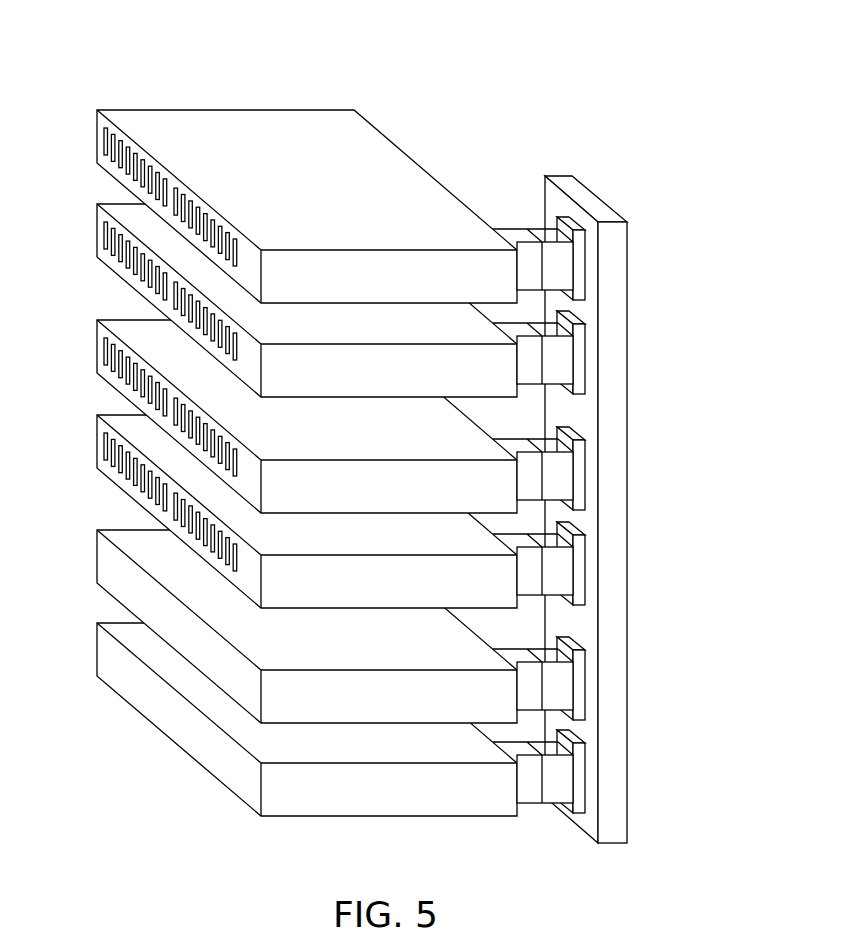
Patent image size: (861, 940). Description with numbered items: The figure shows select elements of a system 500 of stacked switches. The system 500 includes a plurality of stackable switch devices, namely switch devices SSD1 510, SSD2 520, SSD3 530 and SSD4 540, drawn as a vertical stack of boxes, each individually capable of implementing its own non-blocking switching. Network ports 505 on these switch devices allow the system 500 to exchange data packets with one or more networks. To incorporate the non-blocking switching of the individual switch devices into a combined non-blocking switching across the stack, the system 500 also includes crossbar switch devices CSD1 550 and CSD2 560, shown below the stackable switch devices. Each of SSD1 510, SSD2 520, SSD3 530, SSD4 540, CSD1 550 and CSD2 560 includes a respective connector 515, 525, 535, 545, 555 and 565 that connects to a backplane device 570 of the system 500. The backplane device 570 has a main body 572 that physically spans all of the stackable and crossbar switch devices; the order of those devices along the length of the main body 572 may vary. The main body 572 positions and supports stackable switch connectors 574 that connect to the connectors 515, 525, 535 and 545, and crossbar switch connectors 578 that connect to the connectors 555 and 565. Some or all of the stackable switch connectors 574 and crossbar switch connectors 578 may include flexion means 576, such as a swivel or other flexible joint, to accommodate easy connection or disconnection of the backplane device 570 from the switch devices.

The system 500 is at (115, 67).
The network ports 505 is at (103, 181).
The switch device SSD1 510 is at (335, 206).
The connector 515 is at (448, 251).
The switch device SSD2 520 is at (335, 300).
The connector 525 is at (448, 345).
The switch device SSD3 530 is at (335, 416).
The connector 535 is at (448, 461).
The switch device SSD4 540 is at (335, 511).
The connector 545 is at (448, 556).
The crossbar switch device CSD1 550 is at (335, 626).
The connector 555 is at (448, 671).
The crossbar switch device CSD2 560 is at (335, 719).
The connector 565 is at (448, 764).
The backplane device 570 is at (587, 176).
The main body 572 is at (634, 230).
The stackable switch connectors 574 is at (558, 562).
The flexion means 576 is at (589, 648).
The crossbar switch connectors 578 is at (563, 672).